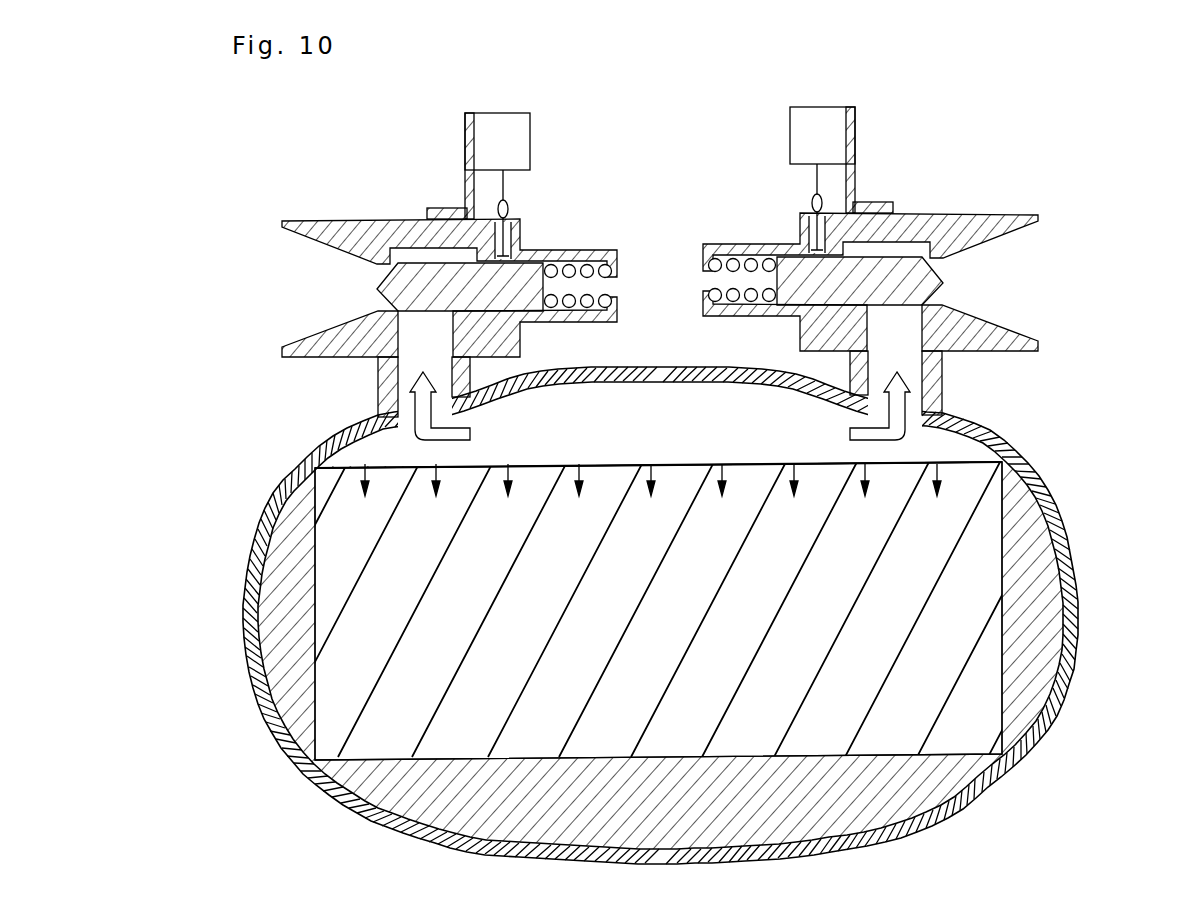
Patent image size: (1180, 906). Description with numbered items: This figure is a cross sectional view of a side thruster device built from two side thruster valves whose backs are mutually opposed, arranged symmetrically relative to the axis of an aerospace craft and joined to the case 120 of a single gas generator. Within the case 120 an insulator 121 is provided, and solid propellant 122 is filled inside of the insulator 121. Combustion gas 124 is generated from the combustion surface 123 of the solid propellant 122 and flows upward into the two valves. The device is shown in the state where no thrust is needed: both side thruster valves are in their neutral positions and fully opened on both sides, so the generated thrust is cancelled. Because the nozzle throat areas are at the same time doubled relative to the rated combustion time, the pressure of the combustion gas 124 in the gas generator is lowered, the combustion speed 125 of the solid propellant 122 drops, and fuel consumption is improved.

The case 120 is at (1062, 503).
The insulator 121 is at (1035, 588).
The solid propellant 122 is at (987, 682).
The combustion surface 123 is at (930, 448).
The combustion gas 124 is at (973, 420).
The combustion speed 125 is at (363, 502).